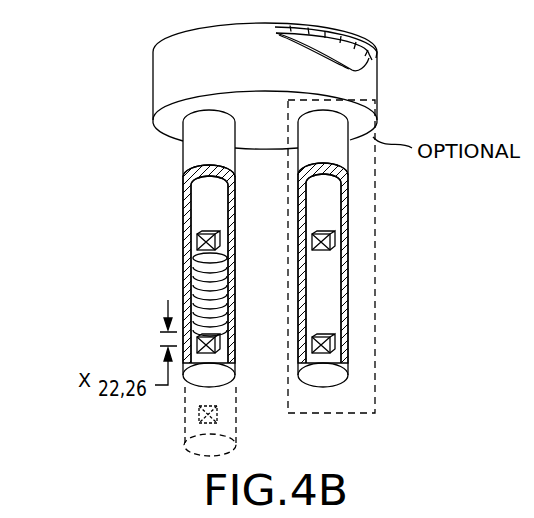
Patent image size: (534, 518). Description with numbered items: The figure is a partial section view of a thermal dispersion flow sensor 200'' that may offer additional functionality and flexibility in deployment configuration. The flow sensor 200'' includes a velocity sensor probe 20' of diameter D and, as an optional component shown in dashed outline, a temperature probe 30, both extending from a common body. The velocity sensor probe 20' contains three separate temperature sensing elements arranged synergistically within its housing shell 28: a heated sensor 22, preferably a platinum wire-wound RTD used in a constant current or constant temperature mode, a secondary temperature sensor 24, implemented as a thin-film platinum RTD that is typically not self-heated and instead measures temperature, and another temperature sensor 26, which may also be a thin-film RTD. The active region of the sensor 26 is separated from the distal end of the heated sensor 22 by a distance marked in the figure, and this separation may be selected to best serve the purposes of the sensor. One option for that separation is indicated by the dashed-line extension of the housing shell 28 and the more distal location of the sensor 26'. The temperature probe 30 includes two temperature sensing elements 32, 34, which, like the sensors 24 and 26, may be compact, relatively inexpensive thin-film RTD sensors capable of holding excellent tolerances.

The thermal dispersion flow sensor 200'' is at (197, 81).
The housing shell 28 is at (203, 150).
The velocity sensor probe 20' is at (132, 264).
The secondary temperature sensor 24 is at (197, 243).
The heated sensor 22 is at (208, 287).
The distal temperature sensor 26 is at (236, 348).
The more distal location of sensor 26' is at (243, 421).
The temperature probe 30 is at (391, 293).
The temperature sensing element 34 is at (335, 240).
The temperature sensing element 32 is at (335, 347).